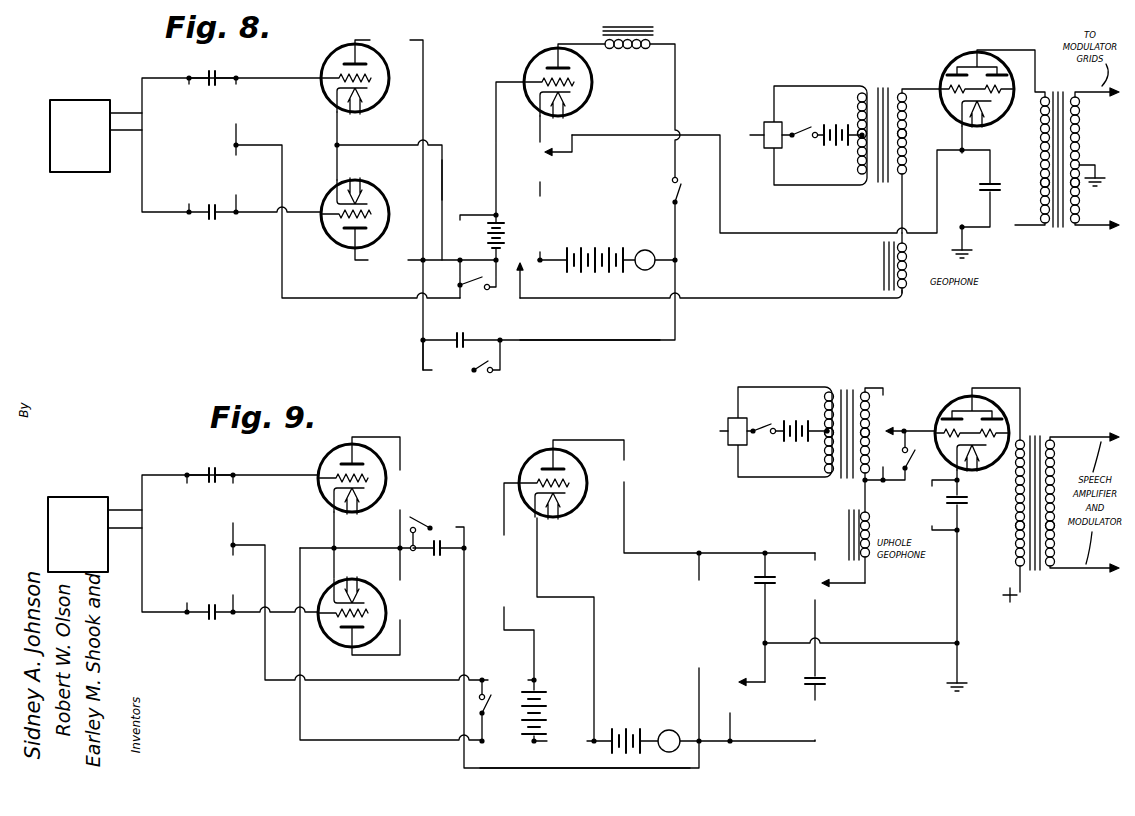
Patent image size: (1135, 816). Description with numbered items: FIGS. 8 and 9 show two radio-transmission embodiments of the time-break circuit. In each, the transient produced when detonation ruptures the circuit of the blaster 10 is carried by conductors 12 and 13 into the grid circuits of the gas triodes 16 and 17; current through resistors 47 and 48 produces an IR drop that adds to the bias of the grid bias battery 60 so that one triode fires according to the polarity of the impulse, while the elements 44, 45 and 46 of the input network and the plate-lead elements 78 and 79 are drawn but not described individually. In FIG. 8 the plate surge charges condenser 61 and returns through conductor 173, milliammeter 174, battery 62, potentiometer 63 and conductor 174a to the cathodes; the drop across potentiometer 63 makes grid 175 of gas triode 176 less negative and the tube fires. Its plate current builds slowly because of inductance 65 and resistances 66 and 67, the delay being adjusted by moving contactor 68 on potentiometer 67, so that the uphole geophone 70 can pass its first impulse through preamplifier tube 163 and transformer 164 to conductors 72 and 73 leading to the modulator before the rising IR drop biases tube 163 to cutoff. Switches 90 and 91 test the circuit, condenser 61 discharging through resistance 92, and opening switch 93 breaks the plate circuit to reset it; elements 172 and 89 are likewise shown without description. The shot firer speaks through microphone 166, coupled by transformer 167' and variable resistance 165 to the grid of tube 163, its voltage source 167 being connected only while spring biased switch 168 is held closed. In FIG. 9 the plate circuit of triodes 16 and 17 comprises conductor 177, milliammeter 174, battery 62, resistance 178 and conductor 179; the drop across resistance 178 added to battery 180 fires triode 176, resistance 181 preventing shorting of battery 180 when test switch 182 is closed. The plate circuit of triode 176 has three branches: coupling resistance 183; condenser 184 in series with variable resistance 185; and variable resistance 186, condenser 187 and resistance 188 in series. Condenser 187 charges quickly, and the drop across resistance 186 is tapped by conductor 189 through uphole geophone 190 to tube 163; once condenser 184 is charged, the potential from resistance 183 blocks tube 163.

In FIG. 8, the blaster 10 is at (83, 100).
In FIG. 9, the blaster 10 is at (81, 497).
In FIG. 8, the conductor 12 is at (125, 112).
In FIG. 9, the conductor 12 is at (124, 510).
In FIG. 8, the conductor 13 is at (124, 132).
In FIG. 9, the conductor 13 is at (124, 530).
In FIG. 8, the resistor 44 is at (193, 138).
In FIG. 9, the resistor 44 is at (192, 556).
In FIG. 8, the condenser 45 is at (212, 205).
In FIG. 9, the condenser 45 is at (211, 620).
In FIG. 8, the condenser 46 is at (225, 75).
In FIG. 9, the condenser 46 is at (214, 468).
In FIG. 8, the resistor 47 is at (244, 173).
In FIG. 9, the resistor 47 is at (240, 568).
In FIG. 8, the resistor 48 is at (246, 108).
In FIG. 9, the resistor 48 is at (242, 512).
In FIG. 8, the gas triode tube 16 is at (326, 52).
In FIG. 9, the gas triode tube 16 is at (330, 450).
In FIG. 8, the gas triode tube 17 is at (378, 192).
In FIG. 9, the gas triode tube 17 is at (372, 580).
In FIG. 8, the resistor 78 is at (390, 38).
In FIG. 9, the resistor 78 is at (408, 490).
In FIG. 8, the resistor 79 is at (372, 264).
In FIG. 9, the resistor 79 is at (408, 600).
In FIG. 8, the conductor 174a is at (444, 180).
In FIG. 8, the resistor 172 is at (460, 222).
In FIG. 8, the grid bias battery 60 is at (494, 237).
In FIG. 8, the switch 91 is at (464, 292).
In FIG. 8, the resistor 89 is at (500, 176).
In FIG. 8, the potentiometer 63 is at (521, 300).
In FIG. 8, the grid 175 is at (530, 64).
In FIG. 9, the grid 175 is at (576, 496).
In FIG. 8, the gas triode tube 176 is at (558, 44).
In FIG. 9, the gas triode tube 176 is at (541, 448).
In FIG. 8, the inductance 65 is at (629, 50).
In FIG. 8, the contactor 68 is at (572, 135).
In FIG. 8, the potentiometer 67 is at (546, 168).
In FIG. 8, the resistance 66 is at (546, 214).
In FIG. 8, the battery 62 is at (600, 250).
In FIG. 9, the battery 62 is at (626, 728).
In FIG. 8, the milliammeter 174 is at (646, 250).
In FIG. 9, the milliammeter 174 is at (674, 722).
In FIG. 8, the switch 93 is at (677, 198).
In FIG. 8, the condenser 61 is at (458, 333).
In FIG. 9, the condenser 61 is at (446, 556).
In FIG. 8, the resistance 92 is at (438, 366).
In FIG. 9, the resistance 92 is at (455, 524).
In FIG. 8, the switch 90 is at (485, 366).
In FIG. 9, the switch 90 is at (428, 526).
In FIG. 8, the conductor 173 is at (592, 342).
In FIG. 8, the microphone 166 is at (764, 148).
In FIG. 9, the microphone 166 is at (726, 445).
In FIG. 8, the spring biased switch 168 is at (803, 128).
In FIG. 9, the spring biased switch 168 is at (760, 428).
In FIG. 8, the voltage potential 167 is at (834, 150).
In FIG. 9, the voltage potential 167 is at (806, 444).
In FIG. 8, the transformer 167' is at (899, 143).
In FIG. 9, the transformer 167' is at (854, 420).
In FIG. 8, the preamplifier tube 163 is at (1013, 114).
In FIG. 9, the preamplifier tube 163 is at (954, 394).
In FIG. 8, the uphole geophone 70 is at (882, 268).
In FIG. 8, the transformer 164 is at (1054, 228).
In FIG. 9, the transformer 164 is at (1036, 430).
In FIG. 8, the conductor 73 is at (1102, 93).
In FIG. 8, the conductor 72 is at (1096, 228).
In FIG. 9, the conductor 177 is at (466, 632).
In FIG. 9, the resistance 181 is at (518, 672).
In FIG. 9, the switch 182 is at (492, 714).
In FIG. 9, the battery 180 is at (546, 714).
In FIG. 9, the resistance 178 is at (550, 750).
In FIG. 9, the conductor 179 is at (396, 738).
In FIG. 9, the coupling resistance 183 is at (690, 620).
In FIG. 9, the condenser 184 is at (754, 580).
In FIG. 9, the variable resistance 185 is at (740, 708).
In FIG. 9, the variable resistance 186 is at (818, 598).
In FIG. 9, the condenser 187 is at (830, 680).
In FIG. 9, the resistance 188 is at (830, 722).
In FIG. 9, the conductor 189 is at (868, 580).
In FIG. 9, the uphole geophone 190 is at (846, 522).
In FIG. 9, the variable resistance 165 is at (892, 410).